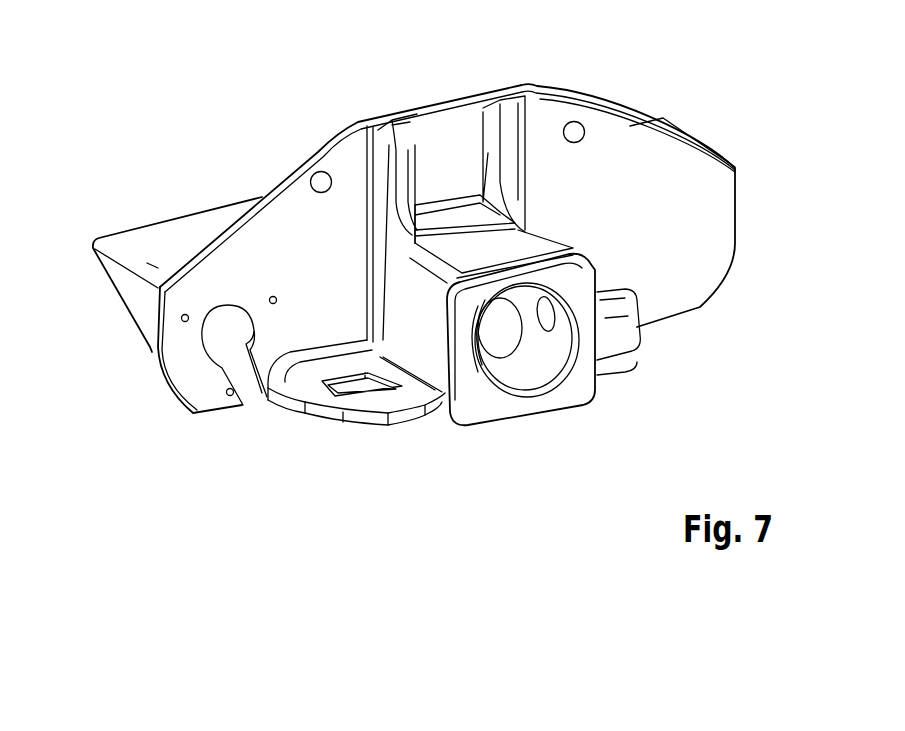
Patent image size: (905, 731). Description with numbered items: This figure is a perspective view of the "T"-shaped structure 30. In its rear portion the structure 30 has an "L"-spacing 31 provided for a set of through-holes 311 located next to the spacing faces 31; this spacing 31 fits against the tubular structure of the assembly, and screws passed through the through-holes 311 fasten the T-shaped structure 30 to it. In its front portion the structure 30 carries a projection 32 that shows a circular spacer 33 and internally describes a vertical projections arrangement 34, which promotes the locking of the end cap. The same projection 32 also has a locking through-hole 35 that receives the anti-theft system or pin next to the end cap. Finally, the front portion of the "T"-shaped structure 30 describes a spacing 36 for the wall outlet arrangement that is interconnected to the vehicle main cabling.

The "T"-shaped structure 30 is at (735, 170).
The "L"-spacing 31 is at (160, 218).
The through-holes 311 is at (317, 173).
The projection 32 is at (507, 258).
The circular spacer 33 is at (562, 373).
The vertical projections arrangement 34 is at (502, 332).
The locking through-hole 35 is at (553, 315).
The spacing 36 is at (213, 363).